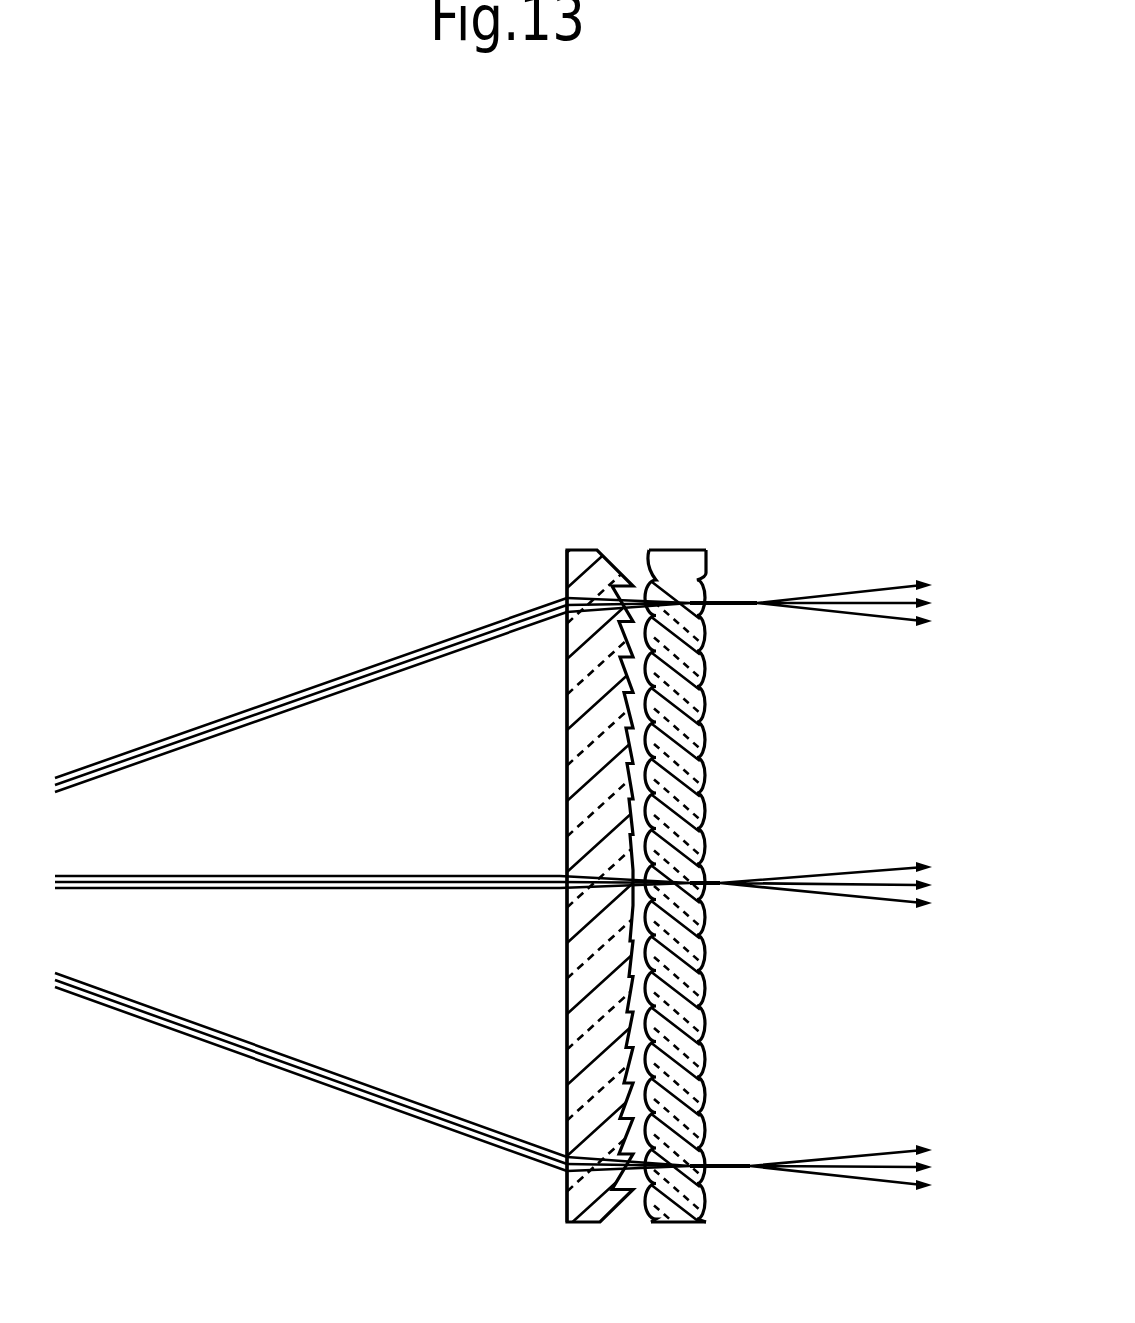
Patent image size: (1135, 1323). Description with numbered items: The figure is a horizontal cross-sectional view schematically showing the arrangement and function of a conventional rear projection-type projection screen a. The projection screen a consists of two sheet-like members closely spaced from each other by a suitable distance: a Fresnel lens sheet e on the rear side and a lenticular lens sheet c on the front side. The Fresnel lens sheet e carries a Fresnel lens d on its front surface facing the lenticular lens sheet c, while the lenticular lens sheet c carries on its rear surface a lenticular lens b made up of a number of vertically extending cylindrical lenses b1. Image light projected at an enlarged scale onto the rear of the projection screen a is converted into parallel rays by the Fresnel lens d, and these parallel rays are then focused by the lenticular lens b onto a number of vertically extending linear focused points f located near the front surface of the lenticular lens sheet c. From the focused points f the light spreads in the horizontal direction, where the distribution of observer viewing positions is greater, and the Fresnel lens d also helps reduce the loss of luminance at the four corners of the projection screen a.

The projection screen a is at (772, 442).
The lenticular lens b is at (640, 1200).
The cylindrical lens b1 is at (637, 548).
The lenticular lens sheet c is at (697, 1027).
The Fresnel lens d is at (592, 549).
The Fresnel lens sheet e is at (566, 550).
The focused point f is at (720, 602).